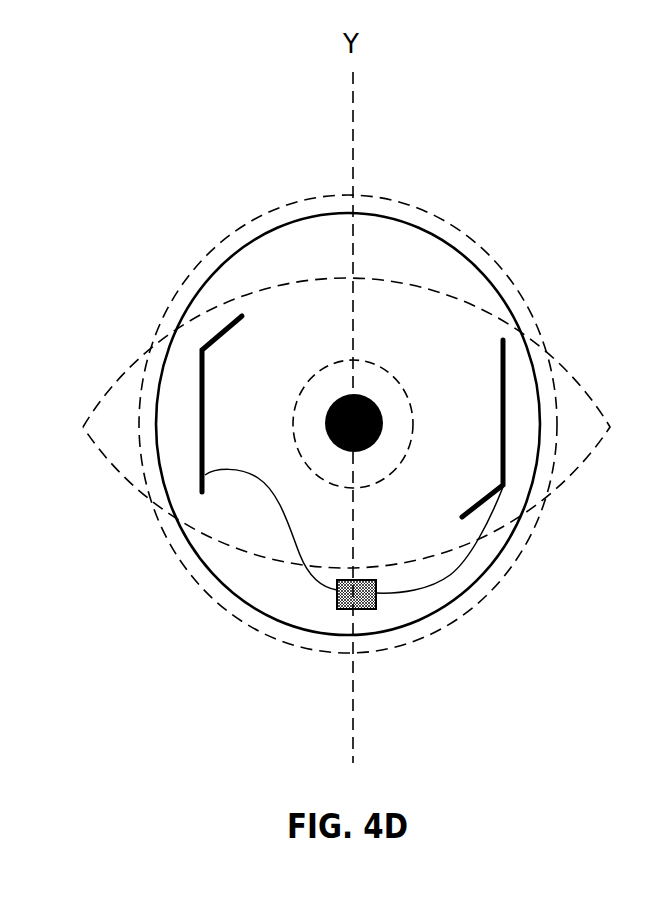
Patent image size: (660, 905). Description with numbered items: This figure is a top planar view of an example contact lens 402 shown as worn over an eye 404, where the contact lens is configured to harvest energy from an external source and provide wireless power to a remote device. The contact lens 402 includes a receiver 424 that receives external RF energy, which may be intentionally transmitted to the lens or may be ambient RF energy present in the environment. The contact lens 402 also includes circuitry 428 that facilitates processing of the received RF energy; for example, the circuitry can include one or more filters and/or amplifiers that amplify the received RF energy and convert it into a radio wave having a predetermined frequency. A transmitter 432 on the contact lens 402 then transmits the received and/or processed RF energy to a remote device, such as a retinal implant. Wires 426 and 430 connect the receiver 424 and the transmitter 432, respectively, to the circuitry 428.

The contact lens 402 is at (455, 245).
The eye 404 is at (523, 297).
The receiver 424 is at (200, 405).
The transmitter 432 is at (505, 410).
The wire 426 is at (290, 525).
The circuitry 428 is at (337, 610).
The wire 430 is at (450, 573).